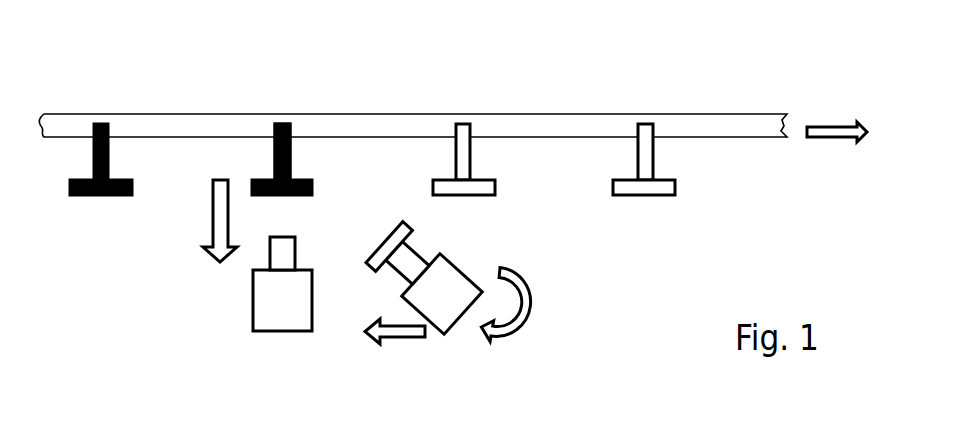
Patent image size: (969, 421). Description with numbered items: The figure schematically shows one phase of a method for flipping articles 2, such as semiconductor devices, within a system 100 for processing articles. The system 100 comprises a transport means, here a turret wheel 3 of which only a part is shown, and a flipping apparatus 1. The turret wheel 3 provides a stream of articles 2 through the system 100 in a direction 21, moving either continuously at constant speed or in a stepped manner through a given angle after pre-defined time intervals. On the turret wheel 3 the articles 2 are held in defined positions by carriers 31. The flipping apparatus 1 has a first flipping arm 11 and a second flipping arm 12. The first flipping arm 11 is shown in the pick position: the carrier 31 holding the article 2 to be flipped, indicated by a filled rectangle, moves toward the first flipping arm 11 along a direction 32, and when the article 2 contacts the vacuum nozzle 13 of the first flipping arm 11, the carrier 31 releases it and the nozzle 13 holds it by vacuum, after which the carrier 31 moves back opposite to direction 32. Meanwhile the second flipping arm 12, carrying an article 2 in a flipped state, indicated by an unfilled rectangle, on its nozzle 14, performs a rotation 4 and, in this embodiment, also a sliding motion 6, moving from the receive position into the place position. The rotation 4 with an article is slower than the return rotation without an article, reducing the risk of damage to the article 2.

The system for processing articles 100 is at (402, 78).
The flipping apparatus 1 is at (598, 310).
The article 2 is at (100, 197).
The turret wheel 3 is at (697, 115).
The rotation 4 is at (524, 326).
The sliding motion 6 is at (403, 339).
The first flipping arm 11 is at (253, 302).
The second flipping arm 12 is at (445, 334).
The vacuum nozzle 13 is at (268, 255).
The nozzle 14 is at (417, 246).
The direction 21 is at (836, 128).
The carrier 31 is at (267, 128).
The direction 32 is at (213, 222).